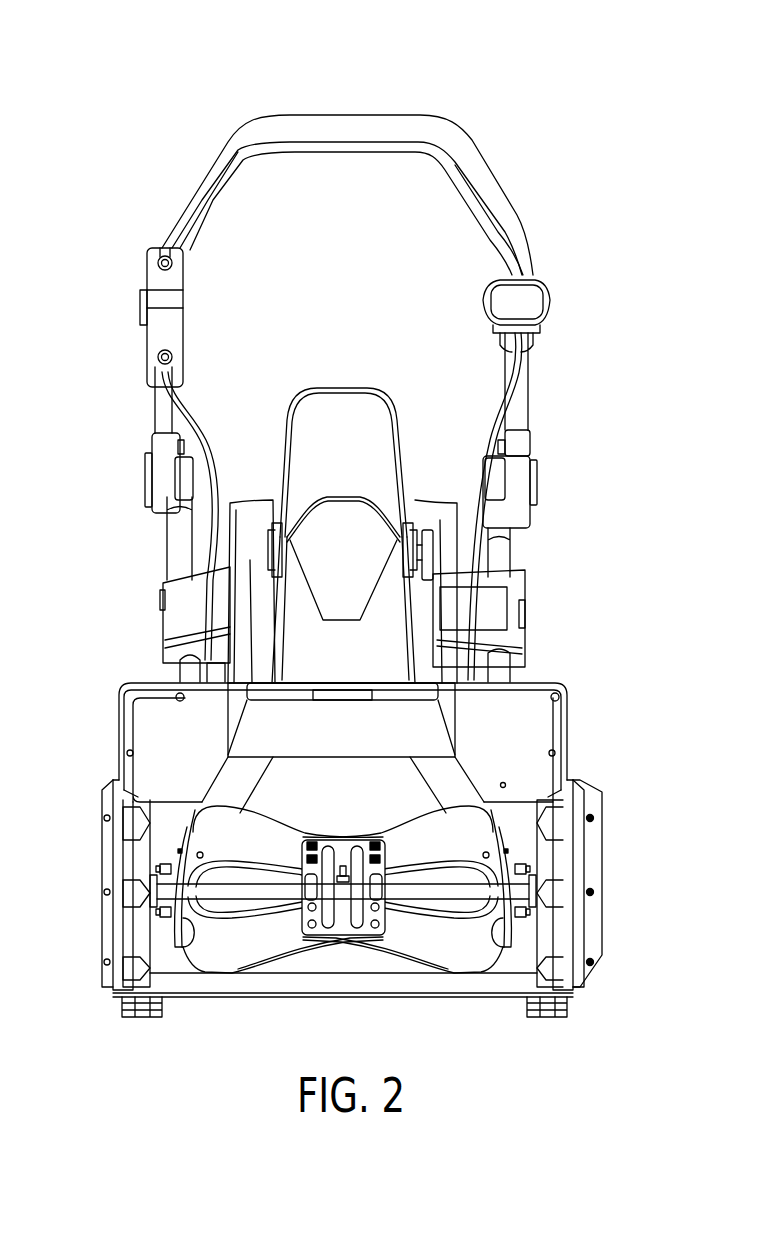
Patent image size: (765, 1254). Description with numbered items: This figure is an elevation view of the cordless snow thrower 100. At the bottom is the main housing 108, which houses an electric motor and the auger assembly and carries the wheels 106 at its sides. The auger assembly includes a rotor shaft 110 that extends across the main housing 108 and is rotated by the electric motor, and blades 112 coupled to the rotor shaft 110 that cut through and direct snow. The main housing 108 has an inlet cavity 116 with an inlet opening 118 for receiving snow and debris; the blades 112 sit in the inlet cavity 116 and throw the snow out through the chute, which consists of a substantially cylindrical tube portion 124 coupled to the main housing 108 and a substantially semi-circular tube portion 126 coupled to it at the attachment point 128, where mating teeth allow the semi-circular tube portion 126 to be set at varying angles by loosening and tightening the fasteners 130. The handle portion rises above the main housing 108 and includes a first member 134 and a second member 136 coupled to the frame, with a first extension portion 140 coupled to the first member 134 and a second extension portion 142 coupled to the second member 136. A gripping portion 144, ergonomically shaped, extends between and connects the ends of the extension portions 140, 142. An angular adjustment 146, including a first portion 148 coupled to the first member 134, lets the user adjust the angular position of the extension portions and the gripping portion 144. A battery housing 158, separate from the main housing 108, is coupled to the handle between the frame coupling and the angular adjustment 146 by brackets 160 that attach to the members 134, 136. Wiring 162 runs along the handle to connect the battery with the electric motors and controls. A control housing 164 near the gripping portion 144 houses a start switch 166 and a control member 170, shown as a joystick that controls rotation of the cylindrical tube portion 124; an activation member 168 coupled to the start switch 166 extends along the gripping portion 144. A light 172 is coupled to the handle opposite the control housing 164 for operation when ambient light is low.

The cordless snow thrower 100 is at (268, 62).
The wheels 106 is at (125, 1012).
The main housing 108 is at (568, 748).
The rotor shaft 110 is at (227, 890).
The blades 112 is at (426, 938).
The inlet cavity 116 is at (293, 1010).
The inlet opening 118 is at (148, 742).
The substantially cylindrical tube portion 124 is at (400, 630).
The substantially semi-circular tube portion 126 is at (345, 388).
The attachment point 128 is at (280, 580).
The fasteners 130 is at (428, 530).
The first member 134 is at (500, 553).
The second member 136 is at (175, 565).
The first extension portion 140 is at (525, 380).
The second extension portion 142 is at (160, 415).
The gripping portion 144 is at (248, 133).
The angular adjustment 146 is at (550, 485).
The first portion 148 is at (128, 478).
The battery housing 158 is at (233, 502).
The brackets 160 is at (173, 607).
The wiring 162 is at (505, 400).
The control housing 164 is at (175, 330).
The start switch 166 is at (140, 310).
The activation member 168 is at (247, 153).
The control member 170 is at (158, 252).
The light 172 is at (485, 300).